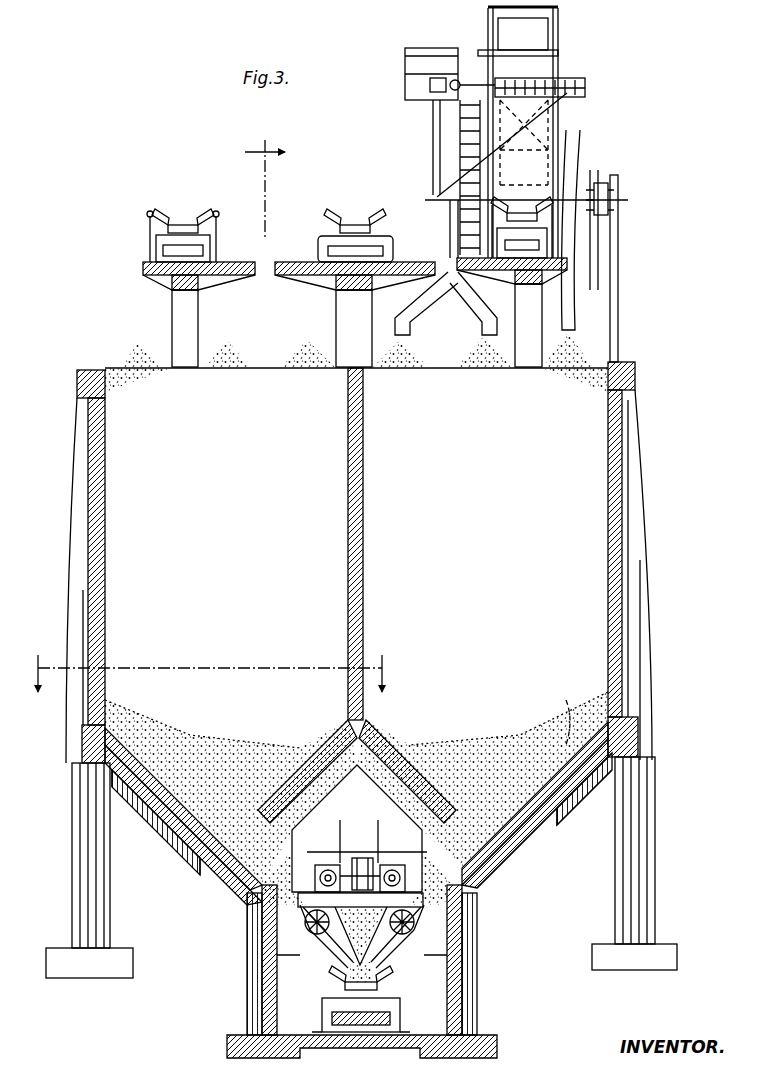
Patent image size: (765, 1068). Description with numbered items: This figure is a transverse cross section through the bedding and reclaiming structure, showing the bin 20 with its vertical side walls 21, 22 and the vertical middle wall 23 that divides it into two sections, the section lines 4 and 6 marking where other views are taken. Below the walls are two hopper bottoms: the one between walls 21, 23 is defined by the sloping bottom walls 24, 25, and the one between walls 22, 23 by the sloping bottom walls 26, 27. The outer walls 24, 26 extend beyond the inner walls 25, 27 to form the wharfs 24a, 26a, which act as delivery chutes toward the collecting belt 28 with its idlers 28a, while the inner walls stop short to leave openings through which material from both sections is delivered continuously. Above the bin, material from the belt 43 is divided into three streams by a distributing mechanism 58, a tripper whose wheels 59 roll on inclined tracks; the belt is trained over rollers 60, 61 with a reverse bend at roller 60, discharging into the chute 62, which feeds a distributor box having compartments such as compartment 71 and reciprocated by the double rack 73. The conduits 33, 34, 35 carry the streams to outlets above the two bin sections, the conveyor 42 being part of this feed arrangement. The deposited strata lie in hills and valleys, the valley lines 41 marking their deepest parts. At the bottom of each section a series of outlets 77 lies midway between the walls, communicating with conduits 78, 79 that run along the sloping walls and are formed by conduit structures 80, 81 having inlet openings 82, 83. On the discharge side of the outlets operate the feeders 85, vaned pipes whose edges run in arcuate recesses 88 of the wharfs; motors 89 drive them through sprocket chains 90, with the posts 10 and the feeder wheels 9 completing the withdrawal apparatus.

The section line 4- 4 is at (258, 190).
The section line 6- 6 is at (206, 673).
The feeder star wheel 9 is at (298, 875).
The feeder drive posts 10 is at (362, 850).
The bin 20 is at (632, 586).
The vertical side wall 21 is at (624, 470).
The vertical side wall 22 is at (93, 505).
The vertical middle wall 23 is at (366, 492).
The sloping bottom wall 24 is at (575, 790).
The wharf 24a is at (487, 875).
The sloping bottom wall 25 is at (400, 727).
The sloping bottom wall 26 is at (178, 845).
The wharf 26a is at (247, 900).
The sloping bottom wall 27 is at (313, 786).
The collecting belt 28 is at (375, 978).
The conveyor idlers 28a is at (345, 968).
The conduit 33 is at (576, 312).
The conduit 34 is at (480, 325).
The conduit 35 is at (398, 320).
The valley line 41 is at (177, 218).
The middle feed conveyor 42 is at (355, 218).
The belt 43 is at (537, 200).
The distributing mechanism 58 is at (577, 79).
The wheels 59 is at (524, 199).
The roller 60 is at (523, 34).
The roller 61 is at (548, 146).
The chute 62 is at (558, 27).
The compartment 71 is at (405, 84).
The double rack 73 is at (471, 76).
The outlets 77 is at (205, 860).
The conduit 78 is at (148, 806).
The conduit 79 is at (280, 752).
The conduit structure 80 is at (175, 745).
The conduit structure 81 is at (252, 765).
The inlet opening 82 is at (566, 712).
The inlet opening 83 is at (418, 738).
The feeders 85 is at (305, 938).
The arcuate recesses 88 is at (328, 945).
The motors 89 is at (327, 866).
The sprocket chains 90 is at (295, 880).